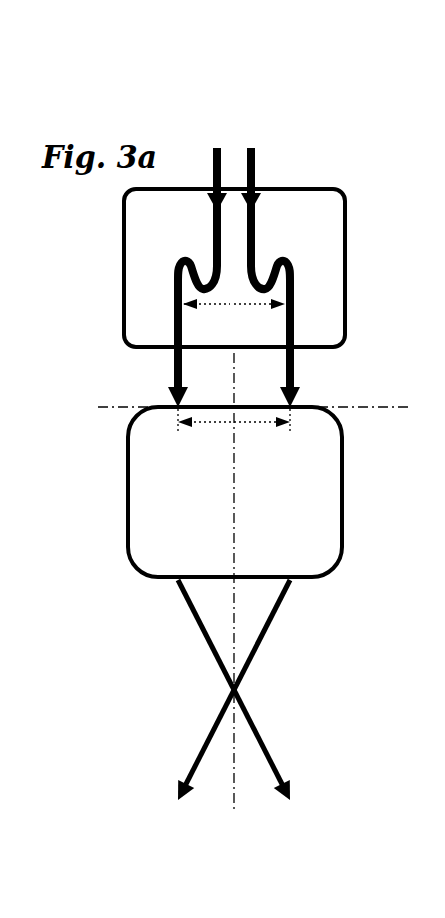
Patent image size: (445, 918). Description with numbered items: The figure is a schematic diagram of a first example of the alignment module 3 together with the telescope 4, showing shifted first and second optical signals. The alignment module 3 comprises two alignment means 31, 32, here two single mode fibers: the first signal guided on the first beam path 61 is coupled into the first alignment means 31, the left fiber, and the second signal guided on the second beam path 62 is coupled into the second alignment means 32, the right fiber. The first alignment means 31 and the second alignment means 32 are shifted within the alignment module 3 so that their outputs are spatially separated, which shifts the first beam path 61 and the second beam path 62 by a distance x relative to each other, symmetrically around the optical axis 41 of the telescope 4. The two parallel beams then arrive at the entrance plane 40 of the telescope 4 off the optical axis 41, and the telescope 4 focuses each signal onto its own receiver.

The alignment module 3 is at (141, 232).
The telescope 4 is at (170, 531).
The first alignment means 31 is at (177, 303).
The second alignment means 32 is at (292, 302).
The entrance plane 40 is at (360, 410).
The optical axis 41 is at (235, 517).
The first beam path 61 is at (216, 152).
The second beam path 62 is at (252, 152).